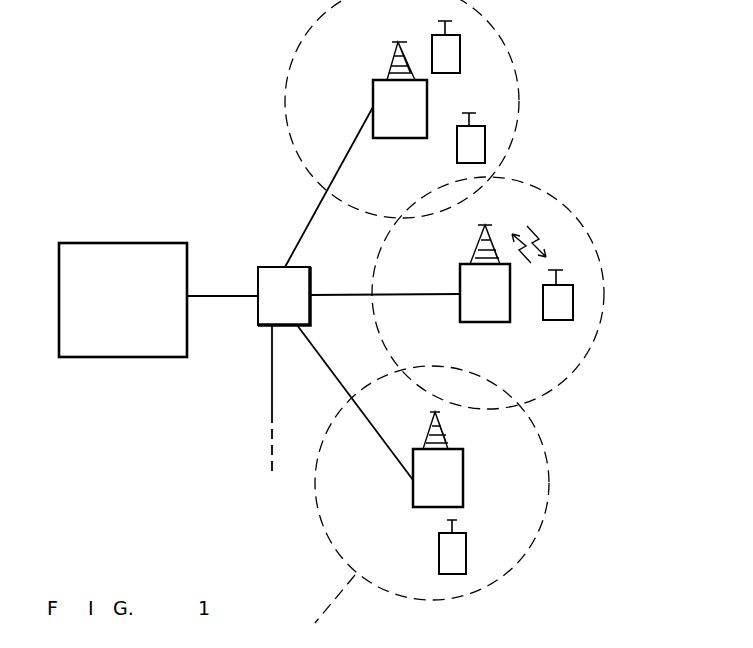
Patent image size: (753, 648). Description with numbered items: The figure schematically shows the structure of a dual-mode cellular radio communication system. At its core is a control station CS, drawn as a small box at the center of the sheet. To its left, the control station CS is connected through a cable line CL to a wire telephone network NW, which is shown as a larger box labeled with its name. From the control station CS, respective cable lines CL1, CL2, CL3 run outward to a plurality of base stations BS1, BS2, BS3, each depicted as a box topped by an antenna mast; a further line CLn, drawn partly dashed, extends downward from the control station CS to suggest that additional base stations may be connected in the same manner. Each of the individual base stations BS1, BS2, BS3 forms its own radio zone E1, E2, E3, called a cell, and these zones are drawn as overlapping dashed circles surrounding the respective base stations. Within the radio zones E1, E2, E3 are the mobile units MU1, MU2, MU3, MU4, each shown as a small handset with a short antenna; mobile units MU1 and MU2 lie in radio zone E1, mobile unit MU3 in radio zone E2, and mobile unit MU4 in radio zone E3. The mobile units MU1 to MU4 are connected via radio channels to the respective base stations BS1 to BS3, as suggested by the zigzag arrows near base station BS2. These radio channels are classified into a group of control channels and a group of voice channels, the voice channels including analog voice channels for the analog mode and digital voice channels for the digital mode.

The wire telephone network NW is at (103, 243).
The control station CS is at (257, 273).
The cable line CL is at (213, 297).
The cable line CL1 is at (298, 235).
The cable line CL2 is at (343, 292).
The cable line CL3 is at (335, 377).
The communication line n CLn is at (272, 408).
The base station BS1 is at (373, 97).
The base station BS2 is at (460, 308).
The base station BS3 is at (412, 487).
The mobile unit MU1 is at (460, 60).
The mobile unit MU2 is at (485, 134).
The mobile unit MU3 is at (573, 307).
The mobile unit MU4 is at (466, 545).
The radio zone E1 is at (486, 26).
The radio zone E2 is at (578, 218).
The radio zone E3 is at (533, 418).